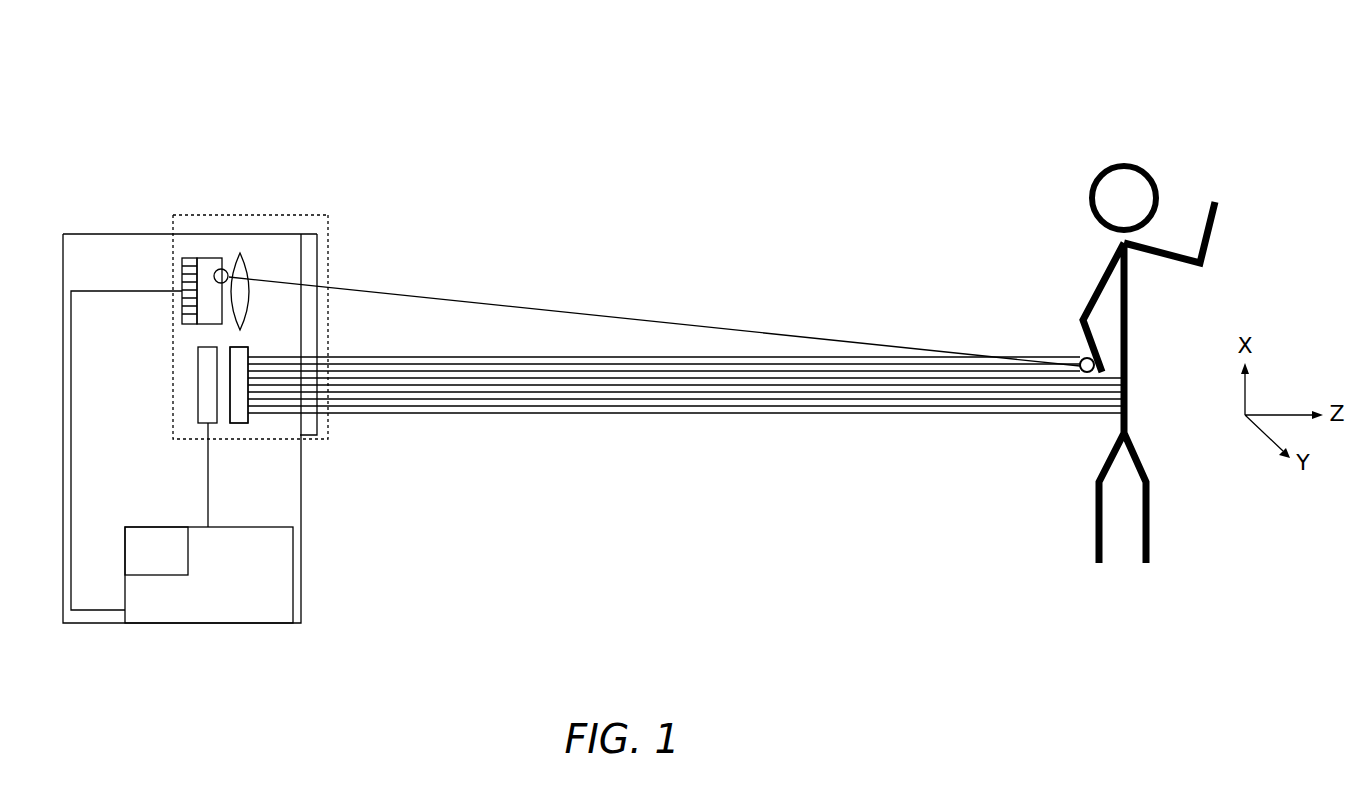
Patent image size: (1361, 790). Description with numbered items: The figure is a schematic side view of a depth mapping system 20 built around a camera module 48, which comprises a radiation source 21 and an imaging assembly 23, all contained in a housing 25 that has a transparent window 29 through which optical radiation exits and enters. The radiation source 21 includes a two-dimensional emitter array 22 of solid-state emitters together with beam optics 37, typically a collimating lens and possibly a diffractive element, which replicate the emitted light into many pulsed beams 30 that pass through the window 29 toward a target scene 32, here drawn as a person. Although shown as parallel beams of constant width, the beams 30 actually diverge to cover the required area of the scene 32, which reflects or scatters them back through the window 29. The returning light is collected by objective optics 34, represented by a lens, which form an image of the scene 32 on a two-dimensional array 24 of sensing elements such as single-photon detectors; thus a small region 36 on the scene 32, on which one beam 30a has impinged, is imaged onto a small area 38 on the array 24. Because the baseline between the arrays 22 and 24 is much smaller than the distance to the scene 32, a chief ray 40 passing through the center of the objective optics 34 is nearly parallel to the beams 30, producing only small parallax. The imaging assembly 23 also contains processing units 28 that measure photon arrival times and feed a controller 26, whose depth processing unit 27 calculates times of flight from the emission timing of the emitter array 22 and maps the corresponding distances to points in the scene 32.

The depth mapping system 20 is at (578, 76).
The radiation source 21 is at (248, 341).
The emitter array 22 is at (198, 380).
The imaging assembly 23 is at (292, 190).
The array of sensing elements 24 is at (211, 224).
The housing 25 is at (82, 233).
The controller 26 is at (293, 580).
The depth processing unit 27 is at (163, 526).
The processing units 28 is at (183, 290).
The transparent window 29 is at (329, 268).
The beams 30 is at (617, 403).
The beam 30a is at (958, 367).
The target scene 32 is at (1100, 270).
The objective optics 34 is at (242, 254).
The small region 36 is at (1080, 360).
The beam optics 37 is at (242, 423).
The small area 38 is at (223, 269).
The chief ray 40 is at (747, 330).
The camera module 48 is at (330, 231).